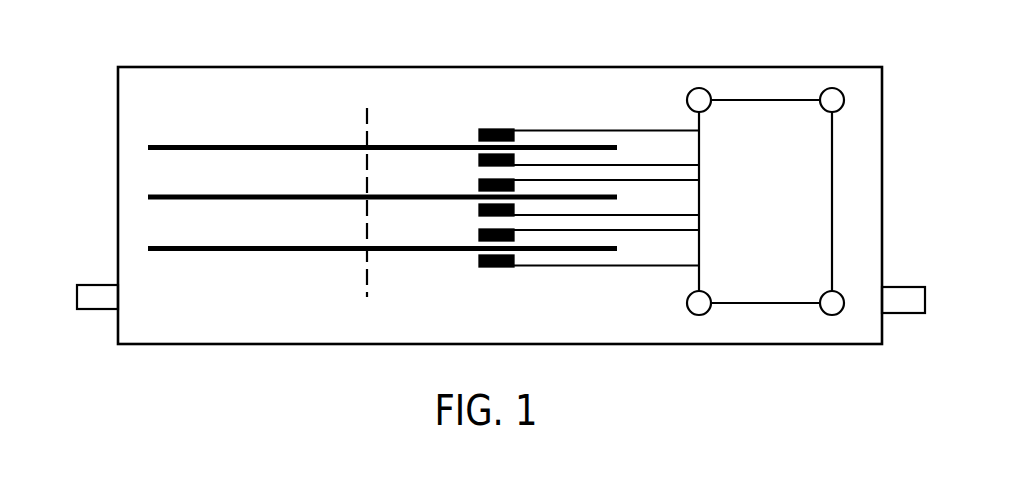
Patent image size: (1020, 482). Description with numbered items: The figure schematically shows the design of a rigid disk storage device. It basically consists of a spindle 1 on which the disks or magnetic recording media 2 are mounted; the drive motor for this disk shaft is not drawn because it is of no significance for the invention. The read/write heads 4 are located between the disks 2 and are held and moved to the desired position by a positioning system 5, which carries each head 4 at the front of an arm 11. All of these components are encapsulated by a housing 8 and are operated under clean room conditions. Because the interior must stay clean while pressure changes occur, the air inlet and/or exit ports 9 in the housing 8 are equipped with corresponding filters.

The spindle 1 is at (367, 123).
The disks 2 is at (183, 145).
The read/write heads 4 is at (490, 130).
The positioning system 5 is at (742, 118).
The housing 8 is at (812, 68).
The air inlet and/or exit ports 9 is at (83, 288).
The arm 11 is at (583, 130).